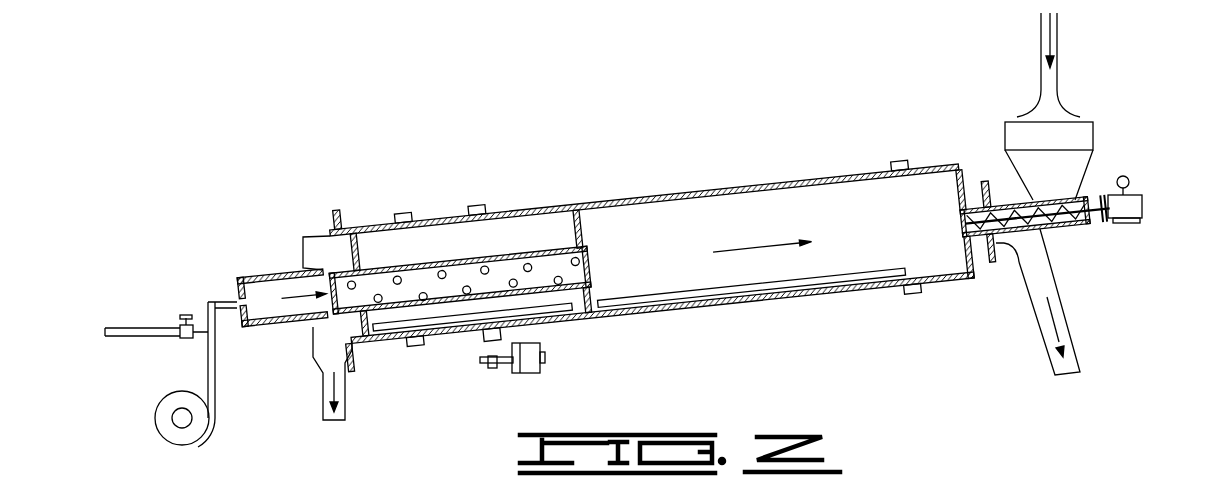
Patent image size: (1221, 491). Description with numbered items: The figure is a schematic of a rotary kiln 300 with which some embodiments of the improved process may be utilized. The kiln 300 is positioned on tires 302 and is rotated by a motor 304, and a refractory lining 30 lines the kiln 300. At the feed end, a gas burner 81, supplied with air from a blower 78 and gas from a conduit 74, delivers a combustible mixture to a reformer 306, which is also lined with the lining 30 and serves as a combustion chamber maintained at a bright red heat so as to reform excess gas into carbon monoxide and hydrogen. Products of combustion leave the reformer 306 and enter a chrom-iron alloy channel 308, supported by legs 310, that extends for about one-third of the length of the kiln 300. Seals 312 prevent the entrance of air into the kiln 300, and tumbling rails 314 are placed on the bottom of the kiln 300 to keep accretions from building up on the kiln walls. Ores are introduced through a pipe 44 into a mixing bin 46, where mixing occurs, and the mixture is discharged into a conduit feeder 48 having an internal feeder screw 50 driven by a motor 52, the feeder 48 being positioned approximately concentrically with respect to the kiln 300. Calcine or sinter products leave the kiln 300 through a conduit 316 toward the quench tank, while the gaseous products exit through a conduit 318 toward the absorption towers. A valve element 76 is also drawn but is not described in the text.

The refractory lining 30 is at (830, 178).
The pipe 44 is at (1057, 82).
The mixing bin 46 is at (1064, 178).
The conduit feeder 48 is at (1082, 228).
The feeder screw 50 is at (1058, 240).
The motor 52 is at (1135, 198).
The conduit 74 is at (130, 338).
The valve 76 is at (183, 317).
The blower 78 is at (194, 440).
The gas burner 81 is at (218, 300).
The rotary kiln 300 is at (742, 323).
The tires 302 is at (478, 203).
The motor 304 is at (535, 378).
The reformer 306 is at (276, 318).
The chrom-iron alloy channel 308 is at (523, 285).
The legs 310 is at (357, 236).
The seals 312 is at (337, 212).
The tumbling rails 314 is at (556, 312).
The conduit 316 is at (325, 392).
The conduit 318 is at (1050, 352).